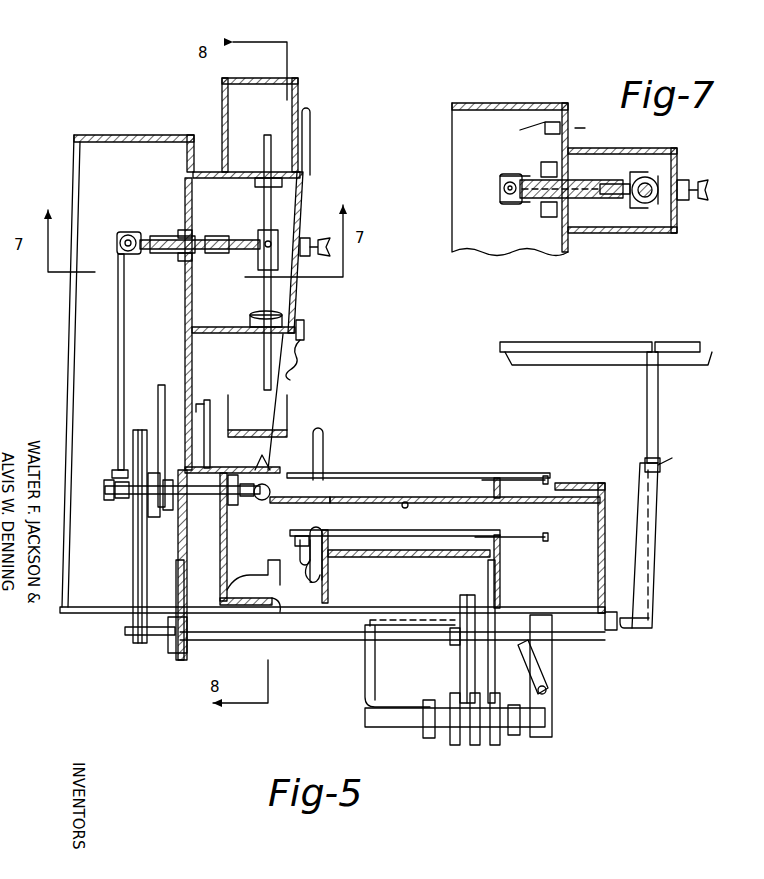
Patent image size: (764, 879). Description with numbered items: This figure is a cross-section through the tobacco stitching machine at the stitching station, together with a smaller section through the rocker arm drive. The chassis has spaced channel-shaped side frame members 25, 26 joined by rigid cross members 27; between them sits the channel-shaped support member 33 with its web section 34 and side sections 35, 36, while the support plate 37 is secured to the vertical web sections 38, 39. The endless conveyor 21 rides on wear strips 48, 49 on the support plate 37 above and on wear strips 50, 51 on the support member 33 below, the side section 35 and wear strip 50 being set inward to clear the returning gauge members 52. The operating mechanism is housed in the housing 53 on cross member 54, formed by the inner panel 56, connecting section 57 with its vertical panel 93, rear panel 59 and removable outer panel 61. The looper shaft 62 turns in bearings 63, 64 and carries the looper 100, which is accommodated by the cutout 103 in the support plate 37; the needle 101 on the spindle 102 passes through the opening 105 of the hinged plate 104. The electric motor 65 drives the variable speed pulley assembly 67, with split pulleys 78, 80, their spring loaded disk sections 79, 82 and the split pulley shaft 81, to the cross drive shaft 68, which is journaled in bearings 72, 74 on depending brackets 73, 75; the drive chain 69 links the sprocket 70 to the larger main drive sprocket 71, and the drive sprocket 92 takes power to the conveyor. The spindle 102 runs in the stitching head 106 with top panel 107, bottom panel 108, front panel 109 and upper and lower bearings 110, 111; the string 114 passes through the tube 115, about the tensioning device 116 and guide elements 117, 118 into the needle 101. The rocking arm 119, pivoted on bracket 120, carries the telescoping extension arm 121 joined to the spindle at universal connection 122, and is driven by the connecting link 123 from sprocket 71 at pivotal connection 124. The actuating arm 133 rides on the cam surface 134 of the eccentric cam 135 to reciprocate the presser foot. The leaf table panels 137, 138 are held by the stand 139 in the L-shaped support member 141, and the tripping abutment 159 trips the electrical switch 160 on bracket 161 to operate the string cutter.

In FIG. 5, the conveyor 21 is at (452, 472).
In FIG. 5, the side frame member 25 is at (228, 540).
In FIG. 5, the side frame member 26 is at (603, 553).
In FIG. 5, the cross members 27 is at (372, 608).
In FIG. 5, the support member 33 is at (503, 576).
In FIG. 5, the web section 34 is at (428, 558).
In FIG. 5, the side section 35 is at (330, 578).
In FIG. 5, the side section 36 is at (502, 604).
In FIG. 5, the support plate 37 is at (398, 505).
In FIG. 5, the vertical web section 38 is at (236, 582).
In FIG. 5, the vertical web section 39 is at (598, 542).
In FIG. 5, the wear strip 48 is at (340, 484).
In FIG. 5, the wear strip 49 is at (505, 488).
In FIG. 5, the wear strip 50 is at (300, 540).
In FIG. 5, the wear strip 51 is at (508, 538).
In FIG. 5, the gauge members 52 is at (324, 438).
In FIG. 5, the housing 53 is at (62, 362).
In FIG. 7, the housing 53 is at (465, 178).
In FIG. 5, the cross member 54 is at (346, 628).
In FIG. 5, the inner panel 56 is at (193, 372).
In FIG. 7, the inner panel 56 is at (572, 250).
In FIG. 5, the connecting section 57 is at (216, 550).
In FIG. 7, the rear panel 59 is at (500, 104).
In FIG. 5, the outer panel 61 is at (68, 305).
In FIG. 5, the looper shaft 62 is at (155, 518).
In FIG. 5, the bearing 63 is at (180, 506).
In FIG. 5, the bearing 64 is at (233, 495).
In FIG. 5, the electric motor 65 is at (392, 707).
In FIG. 5, the variable speed pulley assembly 67 is at (556, 708).
In FIG. 5, the cross drive shaft 68 is at (272, 642).
In FIG. 5, the drive chain 69 is at (134, 555).
In FIG. 5, the sprocket 70 is at (140, 650).
In FIG. 5, the main drive sprocket 71 is at (134, 456).
In FIG. 5, the bearing 72 is at (178, 655).
In FIG. 5, the depending bracket 73 is at (186, 652).
In FIG. 5, the bearing 74 is at (466, 650).
In FIG. 5, the depending bracket 75 is at (488, 582).
In FIG. 5, the split pulley 78 is at (480, 750).
In FIG. 5, the spring loaded disk section 79 is at (500, 746).
In FIG. 5, the split pulley 80 is at (458, 748).
In FIG. 5, the split pulley shaft 81 is at (430, 742).
In FIG. 5, the spring loaded disk section 82 is at (455, 750).
In FIG. 5, the drive sprocket 92 is at (203, 445).
In FIG. 5, the vertical panel 93 is at (207, 613).
In FIG. 5, the looper 100 is at (268, 496).
In FIG. 5, the needle 101 is at (289, 410).
In FIG. 5, the spindle 102 is at (262, 288).
In FIG. 7, the spindle 102 is at (640, 180).
In FIG. 5, the cutout 103 is at (270, 483).
In FIG. 5, the hinged plate 104 is at (270, 455).
In FIG. 5, the opening 105 is at (262, 468).
In FIG. 5, the stitching head 106 is at (300, 306).
In FIG. 7, the stitching head 106 is at (656, 236).
In FIG. 5, the top panel 107 is at (230, 178).
In FIG. 5, the bottom panel 108 is at (204, 334).
In FIG. 5, the front panel 109 is at (300, 212).
In FIG. 5, the upper bearing 110 is at (262, 187).
In FIG. 5, the lower bearing 111 is at (260, 318).
In FIG. 7, the lower bearing 111 is at (676, 176).
In FIG. 5, the string 114 is at (286, 392).
In FIG. 5, the tube 115 is at (310, 150).
In FIG. 5, the tensioning device 116 is at (335, 262).
In FIG. 7, the tensioning device 116 is at (698, 200).
In FIG. 5, the guide element 117 is at (305, 331).
In FIG. 5, the guide element 118 is at (297, 364).
In FIG. 5, the rocking arm 119 is at (162, 238).
In FIG. 5, the bracket 120 is at (177, 260).
In FIG. 7, the bracket 120 is at (546, 217).
In FIG. 5, the extension arm 121 is at (240, 240).
In FIG. 7, the extension arm 121 is at (592, 198).
In FIG. 5, the universal connection 122 is at (256, 252).
In FIG. 7, the universal connection 122 is at (628, 210).
In FIG. 5, the connecting link 123 is at (126, 356).
In FIG. 5, the pivotal connection 124 is at (120, 247).
In FIG. 7, the pivotal connection 124 is at (500, 196).
In FIG. 5, the actuating arm 133 is at (172, 392).
In FIG. 5, the cam surface 134 is at (140, 500).
In FIG. 5, the eccentric cam 135 is at (150, 520).
In FIG. 5, the panel 137 is at (582, 340).
In FIG. 5, the panel 138 is at (686, 340).
In FIG. 5, the stand 139 is at (660, 414).
In FIG. 5, the L-shaped support member 141 is at (660, 535).
In FIG. 5, the tripping abutment 159 is at (310, 542).
In FIG. 5, the electrical switch 160 is at (322, 582).
In FIG. 5, the bracket 161 is at (290, 614).